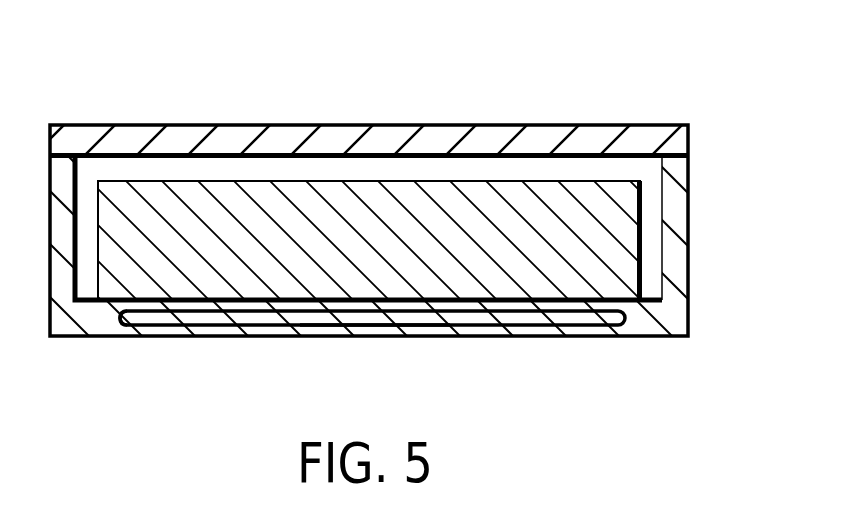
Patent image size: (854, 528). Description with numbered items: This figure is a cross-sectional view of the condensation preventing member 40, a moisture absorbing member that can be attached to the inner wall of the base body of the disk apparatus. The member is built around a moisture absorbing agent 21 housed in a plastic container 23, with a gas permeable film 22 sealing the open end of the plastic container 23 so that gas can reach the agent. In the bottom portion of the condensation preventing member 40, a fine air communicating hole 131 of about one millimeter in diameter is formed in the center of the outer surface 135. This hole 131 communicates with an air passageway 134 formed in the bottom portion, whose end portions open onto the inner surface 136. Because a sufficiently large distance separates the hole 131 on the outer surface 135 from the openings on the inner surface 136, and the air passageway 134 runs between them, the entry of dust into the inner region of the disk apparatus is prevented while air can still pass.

The condensation preventing member 40 is at (669, 102).
The gas permeable film 22 is at (498, 135).
The plastic container 23 is at (677, 192).
The moisture absorbing agent 21 is at (620, 257).
The inner surface 136 is at (80, 177).
The outer surface 135 is at (190, 338).
The air communicating hole 131 is at (373, 338).
The air passageway 134 is at (567, 318).